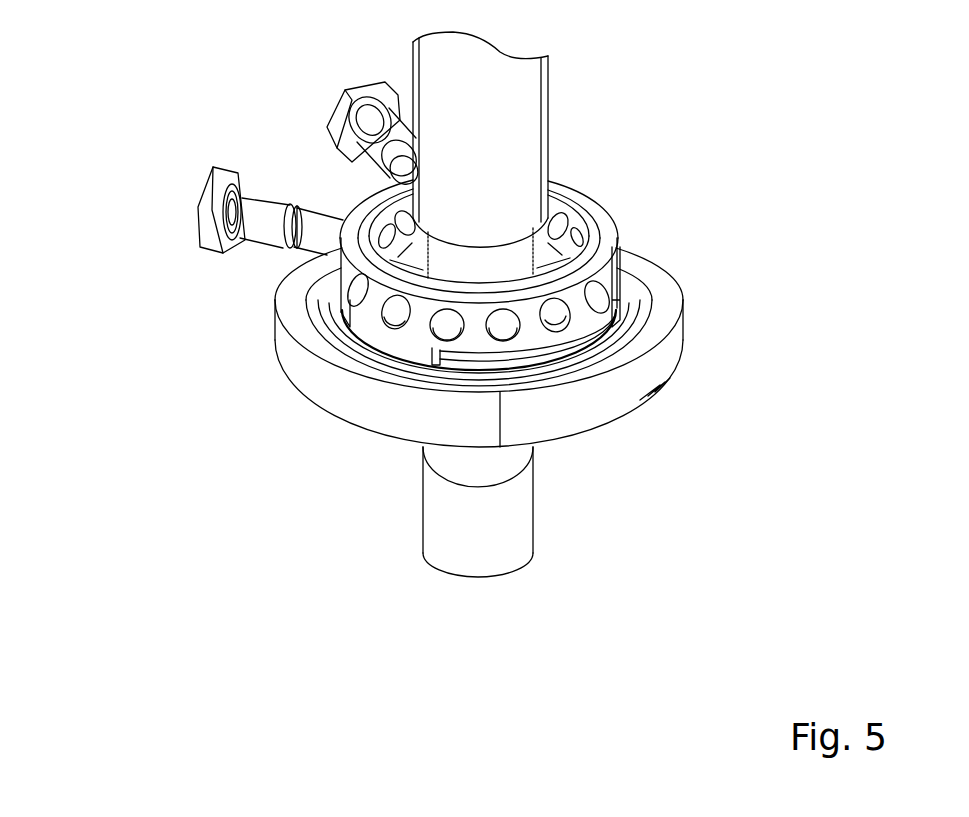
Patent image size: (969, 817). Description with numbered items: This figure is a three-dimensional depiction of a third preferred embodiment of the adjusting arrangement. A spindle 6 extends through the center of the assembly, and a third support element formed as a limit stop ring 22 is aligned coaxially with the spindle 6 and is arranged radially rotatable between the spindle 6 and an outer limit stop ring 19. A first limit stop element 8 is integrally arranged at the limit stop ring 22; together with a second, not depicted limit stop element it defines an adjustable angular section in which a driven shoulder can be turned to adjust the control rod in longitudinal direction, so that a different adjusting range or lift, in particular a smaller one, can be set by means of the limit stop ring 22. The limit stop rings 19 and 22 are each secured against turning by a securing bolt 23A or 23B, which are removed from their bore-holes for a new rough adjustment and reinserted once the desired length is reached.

The spindle 6 is at (520, 113).
The first limit stop element 8 is at (400, 345).
The limit stop ring 19 is at (610, 235).
The limit stop ring 22 is at (580, 217).
The securing bolt 23A is at (210, 207).
The securing bolt 23B is at (340, 110).